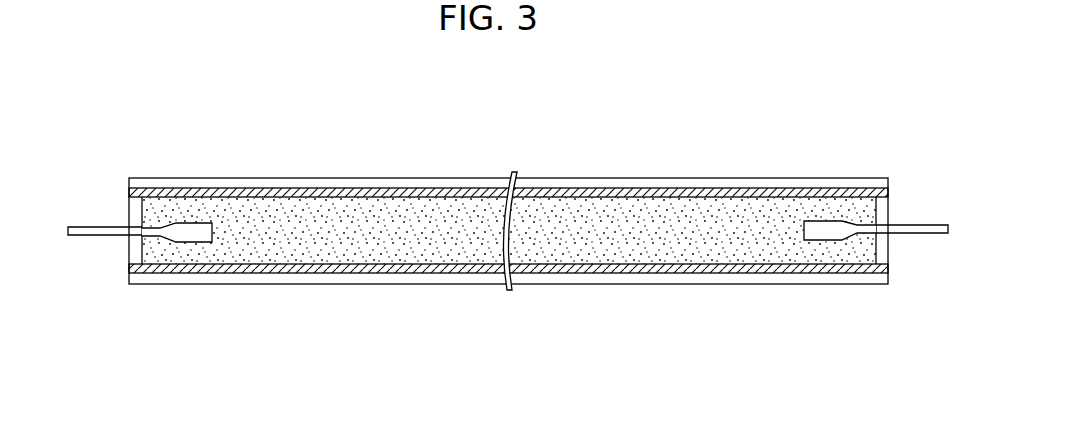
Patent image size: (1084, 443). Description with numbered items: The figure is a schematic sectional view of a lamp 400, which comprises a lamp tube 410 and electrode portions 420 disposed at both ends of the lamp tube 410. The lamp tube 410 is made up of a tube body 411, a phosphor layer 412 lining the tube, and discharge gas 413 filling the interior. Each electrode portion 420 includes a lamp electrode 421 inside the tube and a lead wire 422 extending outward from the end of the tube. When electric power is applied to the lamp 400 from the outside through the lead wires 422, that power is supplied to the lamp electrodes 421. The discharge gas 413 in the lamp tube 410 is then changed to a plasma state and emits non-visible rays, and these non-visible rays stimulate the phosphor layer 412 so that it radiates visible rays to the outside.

The lamp 400 is at (500, 242).
The lamp tube 410 is at (508, 298).
The tube body 411 is at (345, 281).
The phosphor layer 412 is at (407, 273).
The discharge gas 413 is at (315, 368).
The electrode portion 420 is at (500, 304).
The lamp electrode 421 is at (178, 233).
The lead wire 422 is at (205, 338).